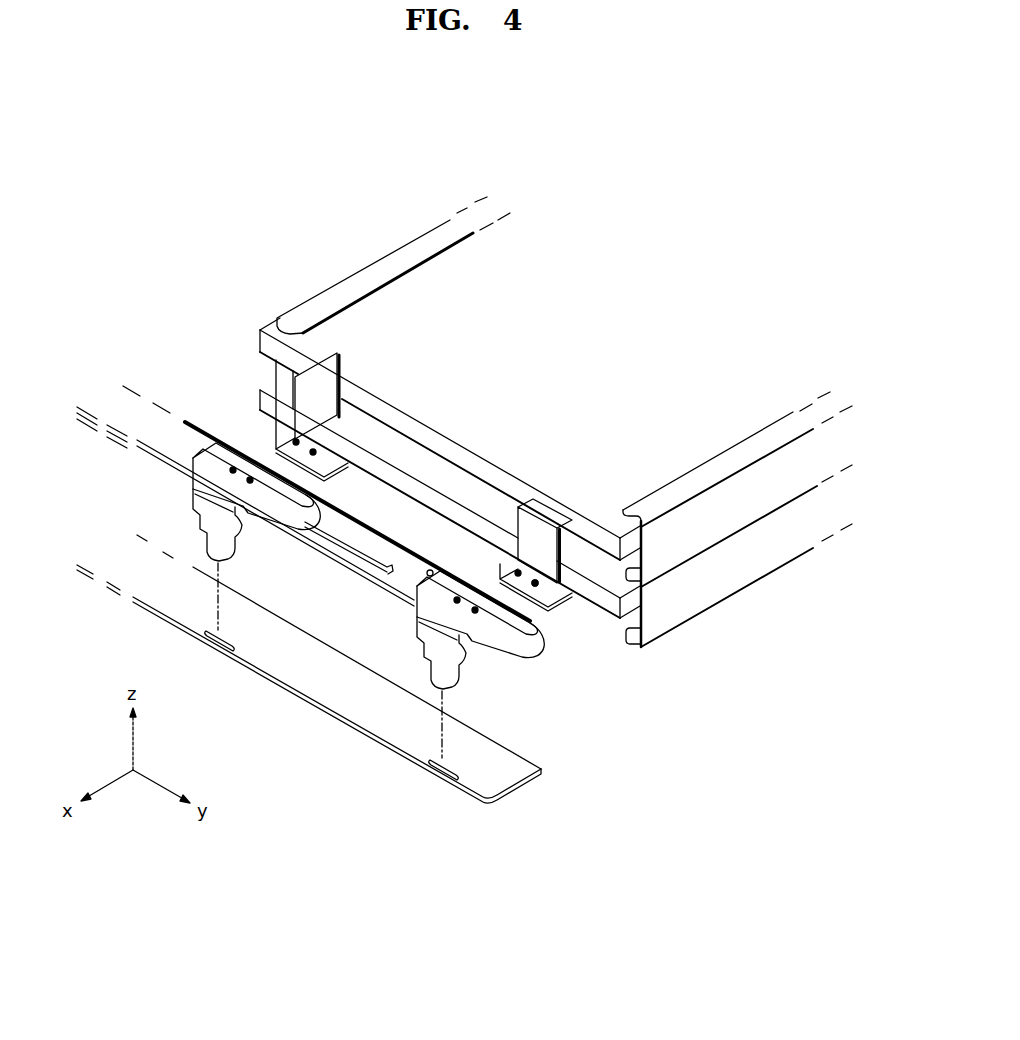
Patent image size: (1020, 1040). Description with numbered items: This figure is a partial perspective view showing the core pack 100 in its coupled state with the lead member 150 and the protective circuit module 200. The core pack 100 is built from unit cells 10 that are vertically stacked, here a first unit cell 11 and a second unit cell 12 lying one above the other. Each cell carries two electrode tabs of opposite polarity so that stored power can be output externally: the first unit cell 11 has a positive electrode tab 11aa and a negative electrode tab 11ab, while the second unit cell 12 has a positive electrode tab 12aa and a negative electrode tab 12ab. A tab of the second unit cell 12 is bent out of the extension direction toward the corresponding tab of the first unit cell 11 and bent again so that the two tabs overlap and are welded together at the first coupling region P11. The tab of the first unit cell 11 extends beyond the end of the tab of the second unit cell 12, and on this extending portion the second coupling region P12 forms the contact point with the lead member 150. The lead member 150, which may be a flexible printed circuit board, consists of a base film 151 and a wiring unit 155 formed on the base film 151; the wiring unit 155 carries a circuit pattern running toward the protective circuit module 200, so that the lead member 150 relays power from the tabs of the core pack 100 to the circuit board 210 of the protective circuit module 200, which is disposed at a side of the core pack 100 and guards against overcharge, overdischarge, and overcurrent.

The core pack 100 is at (605, 246).
The unit cells 10 is at (818, 614).
The first unit cell 11 is at (723, 580).
The second unit cell 12 is at (743, 513).
The negative electrode tab 11ab is at (272, 455).
The positive electrode tab 11aa is at (496, 585).
The negative electrode tab 12ab is at (313, 410).
The positive electrode tab 12aa is at (547, 548).
The first coupling region P11 is at (538, 585).
The second coupling region P12 is at (231, 468).
The lead member 150 is at (513, 731).
The base film 151 is at (504, 658).
The wiring unit 155 is at (462, 680).
The protective circuit module 200 is at (498, 812).
The circuit board 210 is at (520, 797).